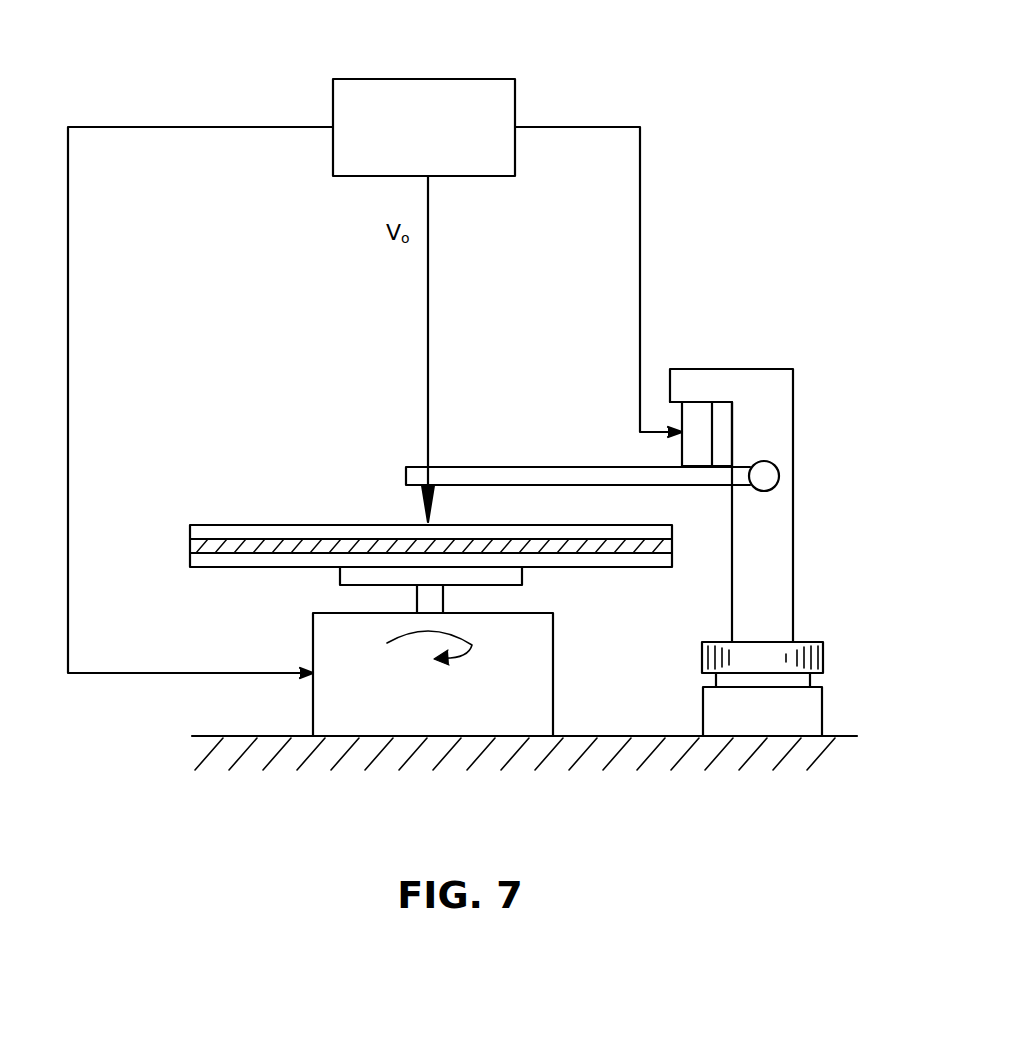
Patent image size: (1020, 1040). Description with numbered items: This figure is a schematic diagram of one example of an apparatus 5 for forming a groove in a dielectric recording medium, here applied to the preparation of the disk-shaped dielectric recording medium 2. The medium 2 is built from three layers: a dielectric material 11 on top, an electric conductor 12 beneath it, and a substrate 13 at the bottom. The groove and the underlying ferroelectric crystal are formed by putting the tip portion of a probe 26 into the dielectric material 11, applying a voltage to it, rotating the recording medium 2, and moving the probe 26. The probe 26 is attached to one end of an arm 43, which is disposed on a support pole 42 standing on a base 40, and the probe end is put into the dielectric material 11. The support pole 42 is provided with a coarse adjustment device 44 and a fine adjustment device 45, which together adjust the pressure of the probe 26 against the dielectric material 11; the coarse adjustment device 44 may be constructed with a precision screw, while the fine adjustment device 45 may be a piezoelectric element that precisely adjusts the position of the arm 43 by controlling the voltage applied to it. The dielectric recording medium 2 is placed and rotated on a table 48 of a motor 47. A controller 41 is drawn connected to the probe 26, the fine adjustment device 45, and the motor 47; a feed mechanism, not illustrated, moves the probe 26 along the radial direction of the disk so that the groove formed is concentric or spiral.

The apparatus for forming the groove 5 is at (591, 78).
The controller 41 is at (435, 79).
The support pole 42 is at (775, 417).
The fine adjustment device 45 is at (700, 417).
The arm 43 is at (531, 467).
The probe 26 is at (420, 502).
The disk-shaped dielectric recording medium 2 is at (377, 551).
The dielectric material 11 is at (190, 533).
The electric conductor 12 is at (190, 548).
The substrate 13 is at (392, 577).
The table 48 is at (340, 578).
The motor 47 is at (385, 712).
The coarse adjustment device 44 is at (778, 653).
The base 40 is at (610, 736).